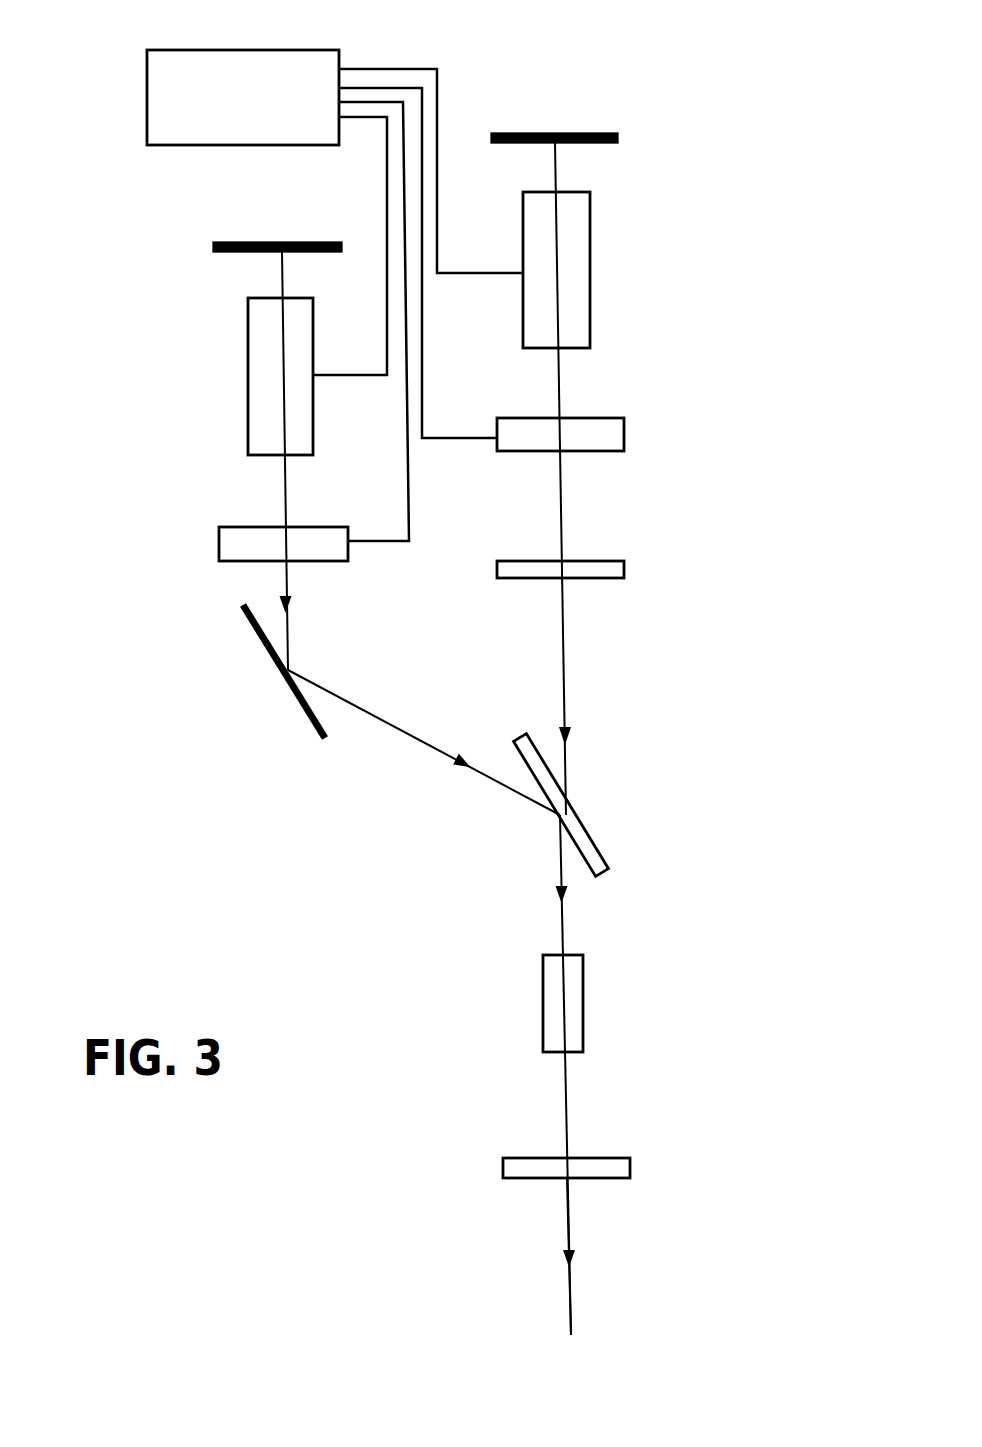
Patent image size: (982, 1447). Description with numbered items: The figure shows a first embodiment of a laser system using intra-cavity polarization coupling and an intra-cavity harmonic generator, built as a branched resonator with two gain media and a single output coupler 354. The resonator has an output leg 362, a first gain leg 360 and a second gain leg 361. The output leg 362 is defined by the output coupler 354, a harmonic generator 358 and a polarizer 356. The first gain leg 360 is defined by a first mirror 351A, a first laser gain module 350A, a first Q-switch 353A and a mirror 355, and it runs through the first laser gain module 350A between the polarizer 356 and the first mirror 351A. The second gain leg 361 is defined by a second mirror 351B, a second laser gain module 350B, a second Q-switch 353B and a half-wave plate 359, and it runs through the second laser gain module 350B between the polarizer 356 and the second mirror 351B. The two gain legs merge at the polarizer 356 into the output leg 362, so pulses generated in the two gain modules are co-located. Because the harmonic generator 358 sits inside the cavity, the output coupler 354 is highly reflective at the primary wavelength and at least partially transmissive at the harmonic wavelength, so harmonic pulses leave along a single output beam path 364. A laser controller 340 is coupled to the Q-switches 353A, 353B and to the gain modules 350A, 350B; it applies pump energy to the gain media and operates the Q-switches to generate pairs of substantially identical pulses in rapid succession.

The laser controller 340 is at (178, 50).
The first mirror 351A is at (238, 242).
The second mirror 351B is at (590, 133).
The first laser gain module 350A is at (248, 355).
The second laser gain module 350B is at (590, 247).
The first Q-switch 353A is at (219, 542).
The second Q-switch 353B is at (624, 433).
The half-wave plate 359 is at (624, 567).
The mirror 355 is at (310, 725).
The first gain leg 360 is at (423, 737).
The second gain leg 361 is at (568, 710).
The polarizer 356 is at (598, 845).
The output leg 362 is at (561, 925).
The harmonic generator 358 is at (583, 1000).
The output coupler 354 is at (503, 1170).
The output beam path 364 is at (569, 1303).